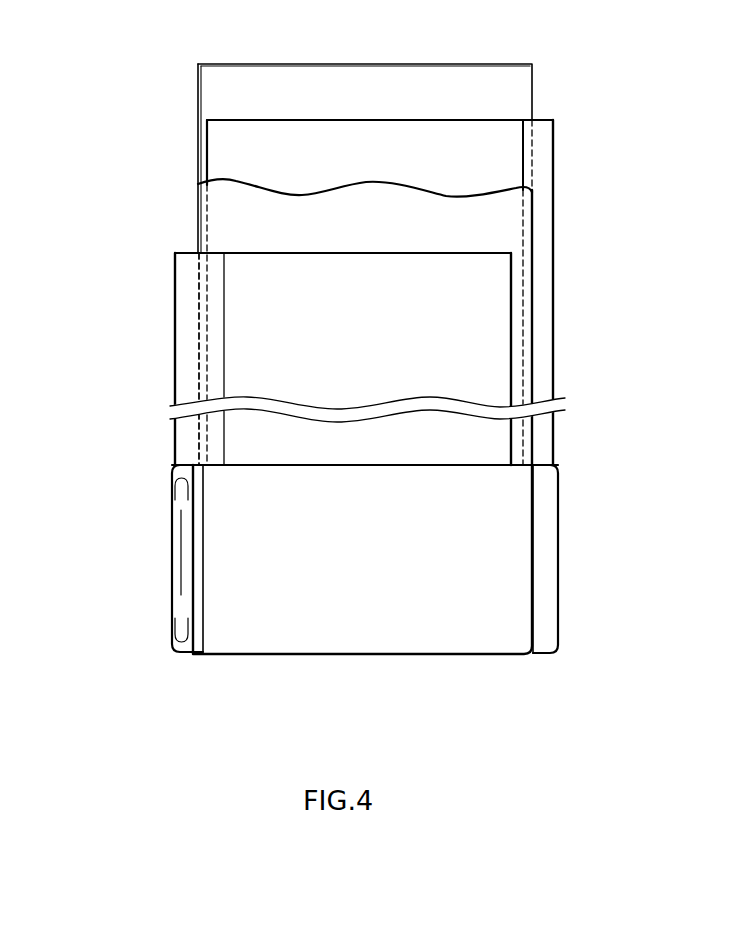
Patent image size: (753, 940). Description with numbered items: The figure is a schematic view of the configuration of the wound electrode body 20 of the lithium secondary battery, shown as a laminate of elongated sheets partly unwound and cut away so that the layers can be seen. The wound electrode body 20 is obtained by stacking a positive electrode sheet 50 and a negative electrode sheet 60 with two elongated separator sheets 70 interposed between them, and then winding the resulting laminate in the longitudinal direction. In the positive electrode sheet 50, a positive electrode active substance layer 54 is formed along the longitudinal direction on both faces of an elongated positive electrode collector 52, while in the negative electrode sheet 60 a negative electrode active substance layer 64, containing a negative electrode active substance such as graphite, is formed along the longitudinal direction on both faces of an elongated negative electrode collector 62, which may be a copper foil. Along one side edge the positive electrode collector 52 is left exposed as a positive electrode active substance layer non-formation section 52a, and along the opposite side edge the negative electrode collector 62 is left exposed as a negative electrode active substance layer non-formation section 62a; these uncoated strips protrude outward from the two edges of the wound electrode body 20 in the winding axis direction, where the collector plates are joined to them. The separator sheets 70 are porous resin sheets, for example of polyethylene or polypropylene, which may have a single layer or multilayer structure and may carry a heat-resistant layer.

The wound electrode body 20 is at (426, 636).
The positive electrode sheet 50 is at (172, 324).
The positive electrode collector 52 is at (172, 389).
The positive electrode active substance layer non-formation section 52a is at (185, 357).
The positive electrode active substance layer 54 is at (236, 270).
The negative electrode sheet 60 is at (556, 197).
The negative electrode collector 62 is at (555, 300).
The negative electrode active substance layer non-formation section 62a is at (543, 270).
The negative electrode active substance layer 64 is at (520, 145).
The separator sheet 70 is at (218, 85).